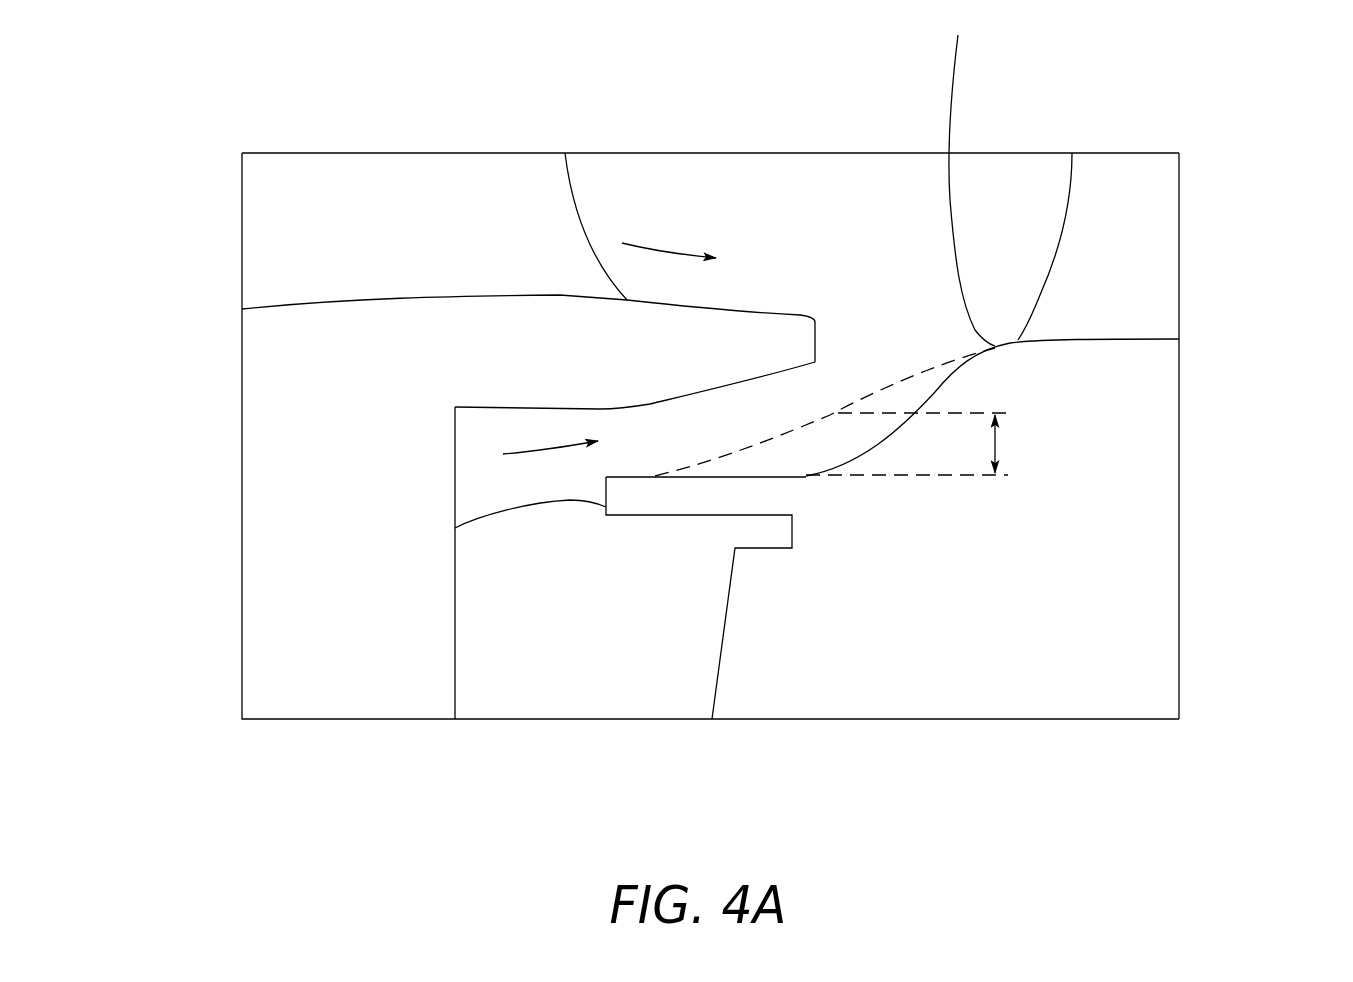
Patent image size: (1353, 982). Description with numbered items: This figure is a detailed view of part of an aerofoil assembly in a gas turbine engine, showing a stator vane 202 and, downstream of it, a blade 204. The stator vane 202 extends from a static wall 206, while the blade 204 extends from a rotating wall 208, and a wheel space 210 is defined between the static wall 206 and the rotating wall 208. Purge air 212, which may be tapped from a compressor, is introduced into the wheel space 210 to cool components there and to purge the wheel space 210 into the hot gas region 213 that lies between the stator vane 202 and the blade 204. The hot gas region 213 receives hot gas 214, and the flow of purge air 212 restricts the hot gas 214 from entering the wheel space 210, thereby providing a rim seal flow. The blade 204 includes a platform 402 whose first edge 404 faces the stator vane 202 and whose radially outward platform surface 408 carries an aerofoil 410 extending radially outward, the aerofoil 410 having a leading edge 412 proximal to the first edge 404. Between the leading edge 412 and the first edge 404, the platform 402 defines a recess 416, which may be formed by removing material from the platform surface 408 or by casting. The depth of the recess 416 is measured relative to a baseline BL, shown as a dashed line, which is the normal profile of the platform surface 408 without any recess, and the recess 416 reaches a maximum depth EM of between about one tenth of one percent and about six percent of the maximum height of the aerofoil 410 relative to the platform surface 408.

The stator vane 202 is at (586, 184).
The blade 204 is at (1029, 175).
The static wall 206 is at (279, 693).
The rotating wall 208 is at (1032, 648).
The wheel space 210 is at (616, 620).
The purge air 212 is at (547, 452).
The hot gas region 213 is at (740, 238).
The hot gas 214 is at (667, 250).
The platform 402 is at (999, 341).
The first edge 404 is at (455, 528).
The platform surface 408 is at (969, 175).
The aerofoil 410 is at (1153, 204).
The leading edge 412 is at (1071, 176).
The recess 416 is at (862, 433).
The baseline BL is at (826, 415).
The maximum depth EM is at (995, 448).